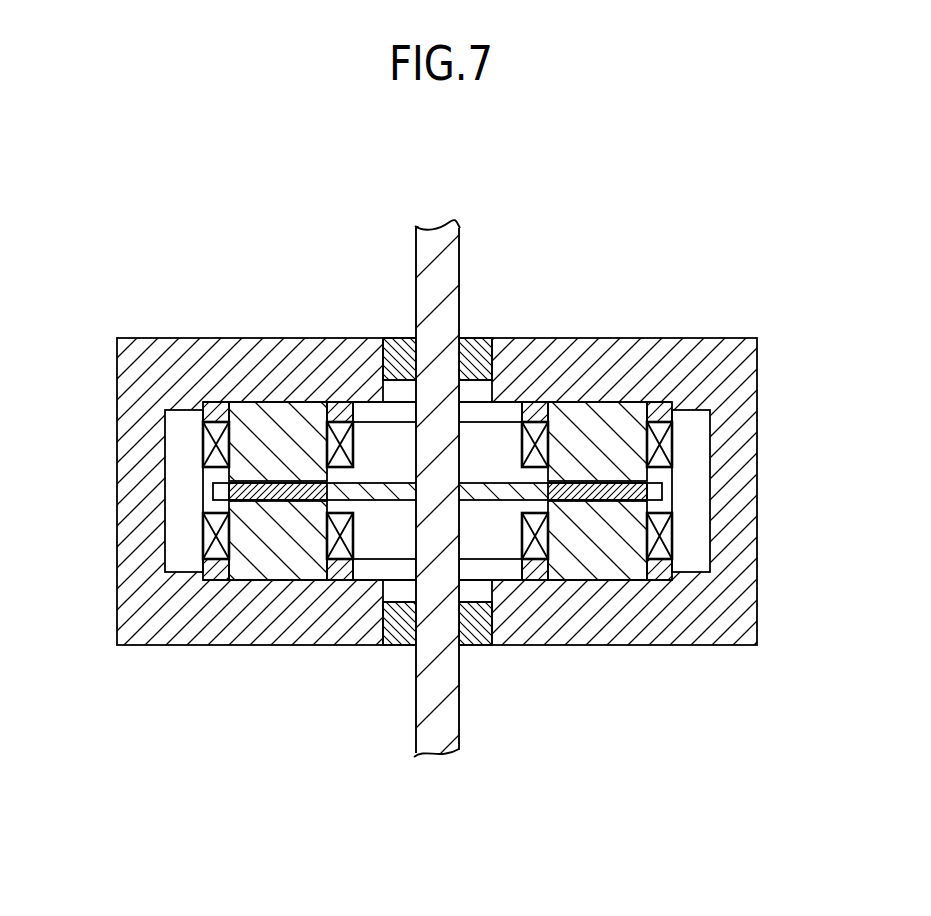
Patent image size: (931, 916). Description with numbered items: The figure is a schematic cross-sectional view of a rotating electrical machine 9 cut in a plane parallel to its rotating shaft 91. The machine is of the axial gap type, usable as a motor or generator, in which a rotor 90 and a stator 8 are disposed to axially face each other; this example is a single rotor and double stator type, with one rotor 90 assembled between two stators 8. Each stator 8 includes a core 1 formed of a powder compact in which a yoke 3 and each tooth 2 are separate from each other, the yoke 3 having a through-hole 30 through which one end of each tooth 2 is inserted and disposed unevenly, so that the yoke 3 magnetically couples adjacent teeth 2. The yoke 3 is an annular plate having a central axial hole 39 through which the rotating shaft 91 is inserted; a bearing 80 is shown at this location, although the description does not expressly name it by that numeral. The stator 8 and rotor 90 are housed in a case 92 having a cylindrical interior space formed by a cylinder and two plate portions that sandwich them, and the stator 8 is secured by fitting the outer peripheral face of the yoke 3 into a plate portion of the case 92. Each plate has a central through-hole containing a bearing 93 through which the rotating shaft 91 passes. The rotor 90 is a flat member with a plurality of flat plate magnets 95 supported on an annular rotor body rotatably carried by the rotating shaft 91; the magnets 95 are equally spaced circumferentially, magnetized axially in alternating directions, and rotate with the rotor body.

The core 1 is at (429, 506).
The tooth 2 is at (586, 565).
The yoke 3 is at (537, 572).
The stator 8 is at (697, 521).
The rotating electrical machine 9 is at (428, 486).
The through-hole 30 is at (655, 573).
The axial hole 39 is at (355, 570).
The bearing 80 is at (670, 547).
The rotor 90 is at (430, 401).
The rotating shaft 91 is at (425, 710).
The case 92 is at (733, 628).
The bearing 93 is at (478, 630).
The magnet 95 is at (583, 480).